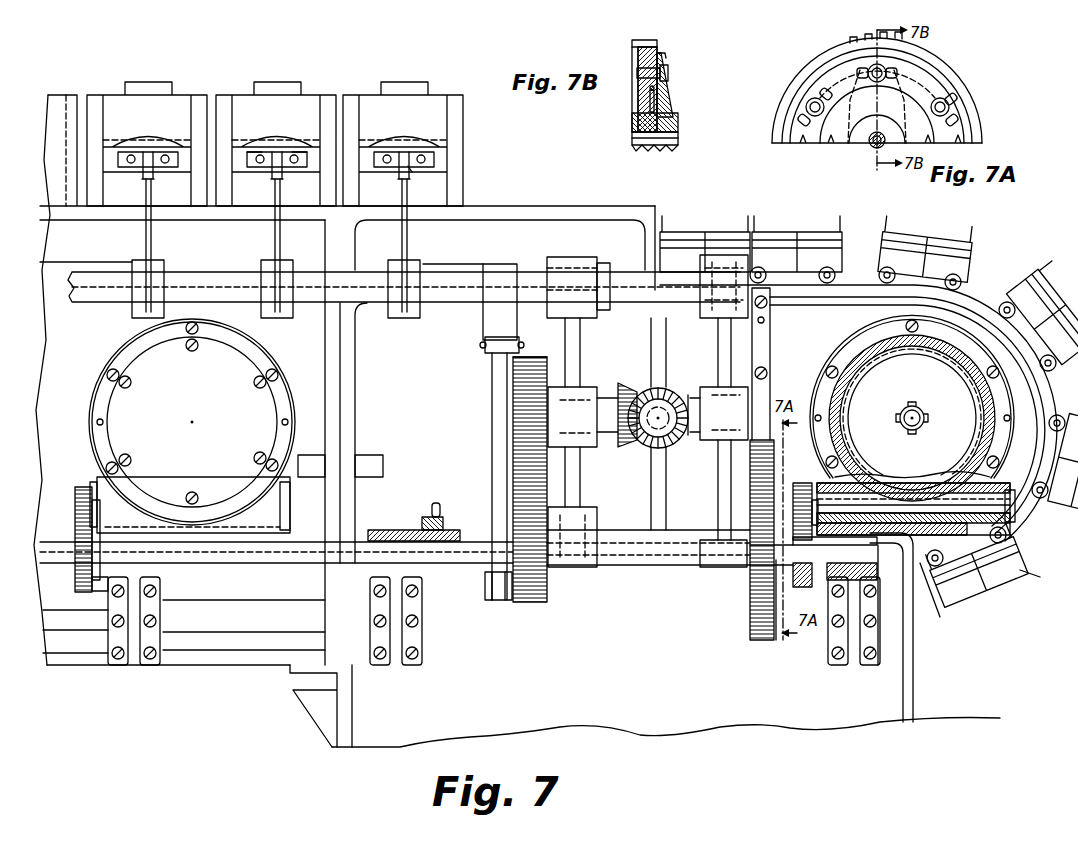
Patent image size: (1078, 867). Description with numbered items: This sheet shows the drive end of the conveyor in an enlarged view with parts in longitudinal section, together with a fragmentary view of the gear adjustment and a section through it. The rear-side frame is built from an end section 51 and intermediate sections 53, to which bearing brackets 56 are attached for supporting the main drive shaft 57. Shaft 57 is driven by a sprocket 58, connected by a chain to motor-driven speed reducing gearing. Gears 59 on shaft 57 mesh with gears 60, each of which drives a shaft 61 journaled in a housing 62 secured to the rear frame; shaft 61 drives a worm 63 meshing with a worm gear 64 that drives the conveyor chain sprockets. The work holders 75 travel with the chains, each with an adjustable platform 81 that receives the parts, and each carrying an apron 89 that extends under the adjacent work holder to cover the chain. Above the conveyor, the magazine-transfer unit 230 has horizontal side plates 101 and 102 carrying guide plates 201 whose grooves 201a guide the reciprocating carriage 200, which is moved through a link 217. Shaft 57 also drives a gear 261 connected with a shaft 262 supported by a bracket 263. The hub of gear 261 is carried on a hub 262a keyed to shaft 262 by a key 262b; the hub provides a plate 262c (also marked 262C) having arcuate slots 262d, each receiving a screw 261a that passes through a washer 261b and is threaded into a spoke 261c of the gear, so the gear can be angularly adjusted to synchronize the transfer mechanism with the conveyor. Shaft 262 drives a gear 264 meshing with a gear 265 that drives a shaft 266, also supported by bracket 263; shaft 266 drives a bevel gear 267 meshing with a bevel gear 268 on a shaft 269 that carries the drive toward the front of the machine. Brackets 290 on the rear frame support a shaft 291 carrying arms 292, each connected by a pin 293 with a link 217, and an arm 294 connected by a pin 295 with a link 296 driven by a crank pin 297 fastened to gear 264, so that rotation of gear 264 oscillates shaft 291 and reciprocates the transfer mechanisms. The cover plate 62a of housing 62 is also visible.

In FIG. 7, the end section 51 is at (811, 719).
In FIG. 7, the intermediate section 53 is at (266, 668).
In FIG. 7, the bearing bracket 56 is at (152, 667).
In FIG. 7, the main drive shaft 57 is at (254, 562).
In FIG. 7, the sprocket 58 is at (432, 505).
In FIG. 7, the gear 59 is at (74, 590).
In FIG. 7, the gear 60 is at (75, 504).
In FIG. 7, the shaft 61 is at (1012, 508).
In FIG. 7, the housing 62 is at (92, 456).
In FIG. 7, the cover plate 62a is at (108, 432).
In FIG. 7, the worm 63 is at (938, 477).
In FIG. 7, the worm gear 64 is at (857, 363).
In FIG. 7, the work holder 75 is at (873, 228).
In FIG. 7, the adjustable platform 81 is at (957, 252).
In FIG. 7, the apron 89 is at (975, 298).
In FIG. 7, the side plate 101 is at (331, 197).
In FIG. 7, the side plate 102 is at (220, 197).
In FIG. 7, the carriage 200 is at (278, 150).
In FIG. 7, the guide plate 201 is at (246, 168).
In FIG. 7, the groove 201a is at (257, 151).
In FIG. 7, the link 217 is at (406, 151).
In FIG. 7, the head assembly 230 is at (275, 192).
In FIG. 7, the gear 261 is at (760, 636).
In FIG. 7A, the gear 261 is at (840, 47).
In FIG. 7B, the gear 261 is at (632, 43).
In FIG. 7A, the screw 261a is at (900, 80).
In FIG. 7B, the screw 261a is at (668, 75).
In FIG. 7A, the washer 261b is at (954, 102).
In FIG. 7B, the washer 261b is at (665, 62).
In FIG. 7B, the spoke 261c is at (643, 100).
In FIG. 7, the shaft 262 is at (640, 562).
In FIG. 7A, the shaft 262 is at (873, 138).
In FIG. 7B, the hub 262a is at (678, 121).
In FIG. 7A, the key 262b is at (818, 118).
In FIG. 7A, the plate 262c is at (946, 100).
In FIG. 7B, the plate 262c is at (665, 98).
In FIG. 7A, the arcuate slot 262d is at (950, 125).
In FIG. 7, the plate 262C is at (778, 565).
In FIG. 7, the bracket 263 is at (578, 568).
In FIG. 7, the gear 264 is at (513, 494).
In FIG. 7, the gear 265 is at (513, 419).
In FIG. 7, the shaft 266 is at (586, 392).
In FIG. 7, the bevel gear 267 is at (625, 446).
In FIG. 7, the bevel gear 268 is at (672, 377).
In FIG. 7, the shaft 269 is at (666, 432).
In FIG. 7, the bracket 290 is at (582, 252).
In FIG. 7, the shaft 291 is at (457, 268).
In FIG. 7, the arm 292 is at (402, 246).
In FIG. 7, the pin 293 is at (421, 169).
In FIG. 7, the arm 294 is at (483, 321).
In FIG. 7, the pin 295 is at (483, 346).
In FIG. 7, the link 296 is at (492, 395).
In FIG. 7, the crank pin 297 is at (486, 590).